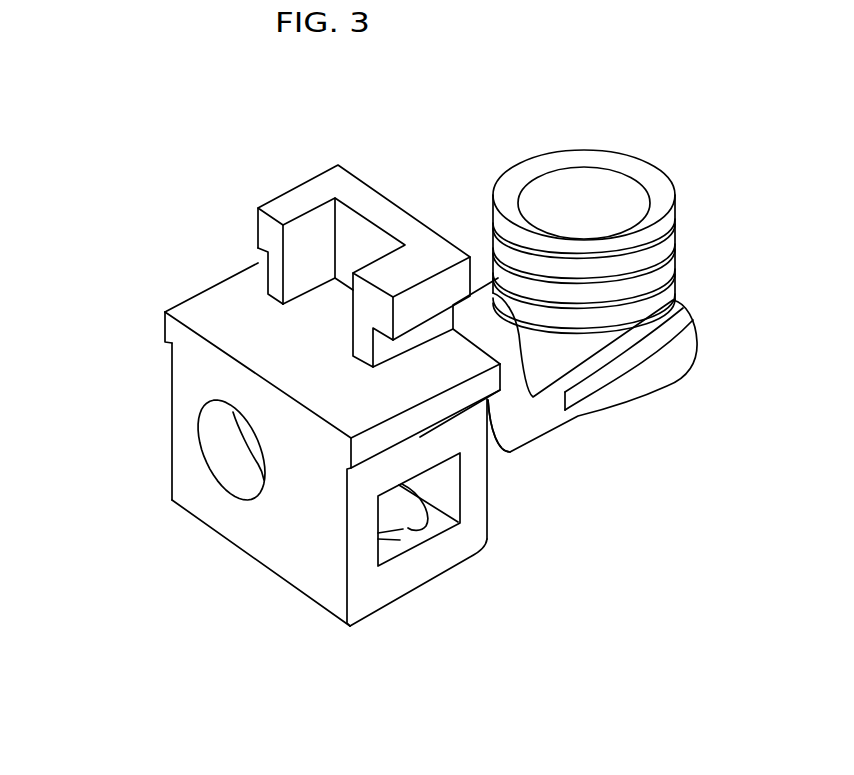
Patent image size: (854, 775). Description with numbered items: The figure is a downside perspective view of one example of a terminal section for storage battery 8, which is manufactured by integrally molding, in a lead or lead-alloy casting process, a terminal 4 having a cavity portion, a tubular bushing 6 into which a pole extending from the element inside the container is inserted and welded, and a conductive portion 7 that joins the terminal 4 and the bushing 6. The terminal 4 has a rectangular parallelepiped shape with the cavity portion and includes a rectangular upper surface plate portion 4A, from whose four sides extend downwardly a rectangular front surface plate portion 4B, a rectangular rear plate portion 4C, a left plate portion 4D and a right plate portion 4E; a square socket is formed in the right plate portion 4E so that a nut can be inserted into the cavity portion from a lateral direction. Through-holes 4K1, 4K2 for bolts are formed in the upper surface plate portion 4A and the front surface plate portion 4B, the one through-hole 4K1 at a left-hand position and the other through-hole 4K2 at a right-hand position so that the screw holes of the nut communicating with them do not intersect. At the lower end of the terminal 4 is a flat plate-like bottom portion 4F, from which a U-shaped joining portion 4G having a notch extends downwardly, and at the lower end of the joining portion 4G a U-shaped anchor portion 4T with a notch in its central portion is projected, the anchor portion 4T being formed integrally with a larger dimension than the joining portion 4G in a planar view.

The terminal 4 is at (311, 551).
The upper surface plate portion 4A is at (388, 612).
The front surface plate portion 4B is at (272, 512).
The rear plate portion 4C is at (496, 462).
The left plate portion 4D is at (470, 517).
The right plate portion 4E is at (168, 393).
The bottom portion 4F is at (230, 315).
The joining portion 4G is at (275, 275).
The anchor portion 4T is at (297, 201).
The through-hole 4K1 is at (410, 528).
The through-hole 4K2 is at (210, 420).
The bushing 6 is at (655, 217).
The conductive portion 7 is at (518, 408).
The terminal section for storage battery 8 is at (405, 118).